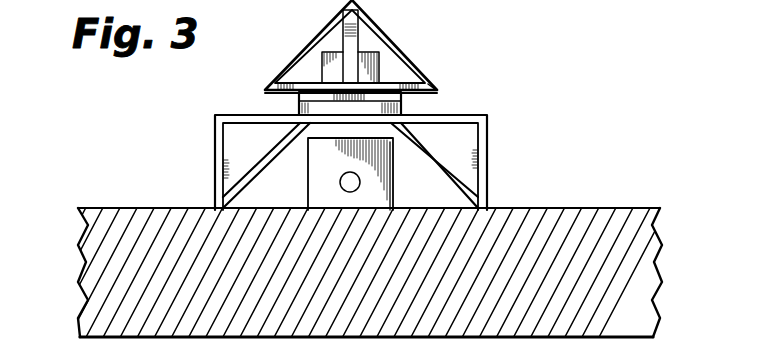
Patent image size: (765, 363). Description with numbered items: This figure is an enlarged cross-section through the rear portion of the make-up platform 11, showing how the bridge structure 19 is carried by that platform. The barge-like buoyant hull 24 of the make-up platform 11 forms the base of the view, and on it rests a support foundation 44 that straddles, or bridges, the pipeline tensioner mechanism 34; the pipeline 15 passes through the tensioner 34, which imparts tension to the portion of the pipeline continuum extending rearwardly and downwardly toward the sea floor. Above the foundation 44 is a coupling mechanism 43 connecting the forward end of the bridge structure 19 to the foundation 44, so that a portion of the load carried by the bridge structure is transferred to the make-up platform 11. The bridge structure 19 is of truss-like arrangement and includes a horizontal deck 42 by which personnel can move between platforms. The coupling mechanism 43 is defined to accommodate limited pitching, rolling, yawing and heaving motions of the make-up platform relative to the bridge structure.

The make-up platform 11 is at (578, 119).
The pipeline 15 is at (357, 189).
The bridge structure 19 is at (411, 44).
The buoyant hull 24 is at (597, 210).
The pipeline tensioner mechanism 34 is at (389, 177).
The horizontal deck 42 is at (412, 82).
The coupling mechanism 43 is at (413, 105).
The support foundation 44 is at (214, 141).